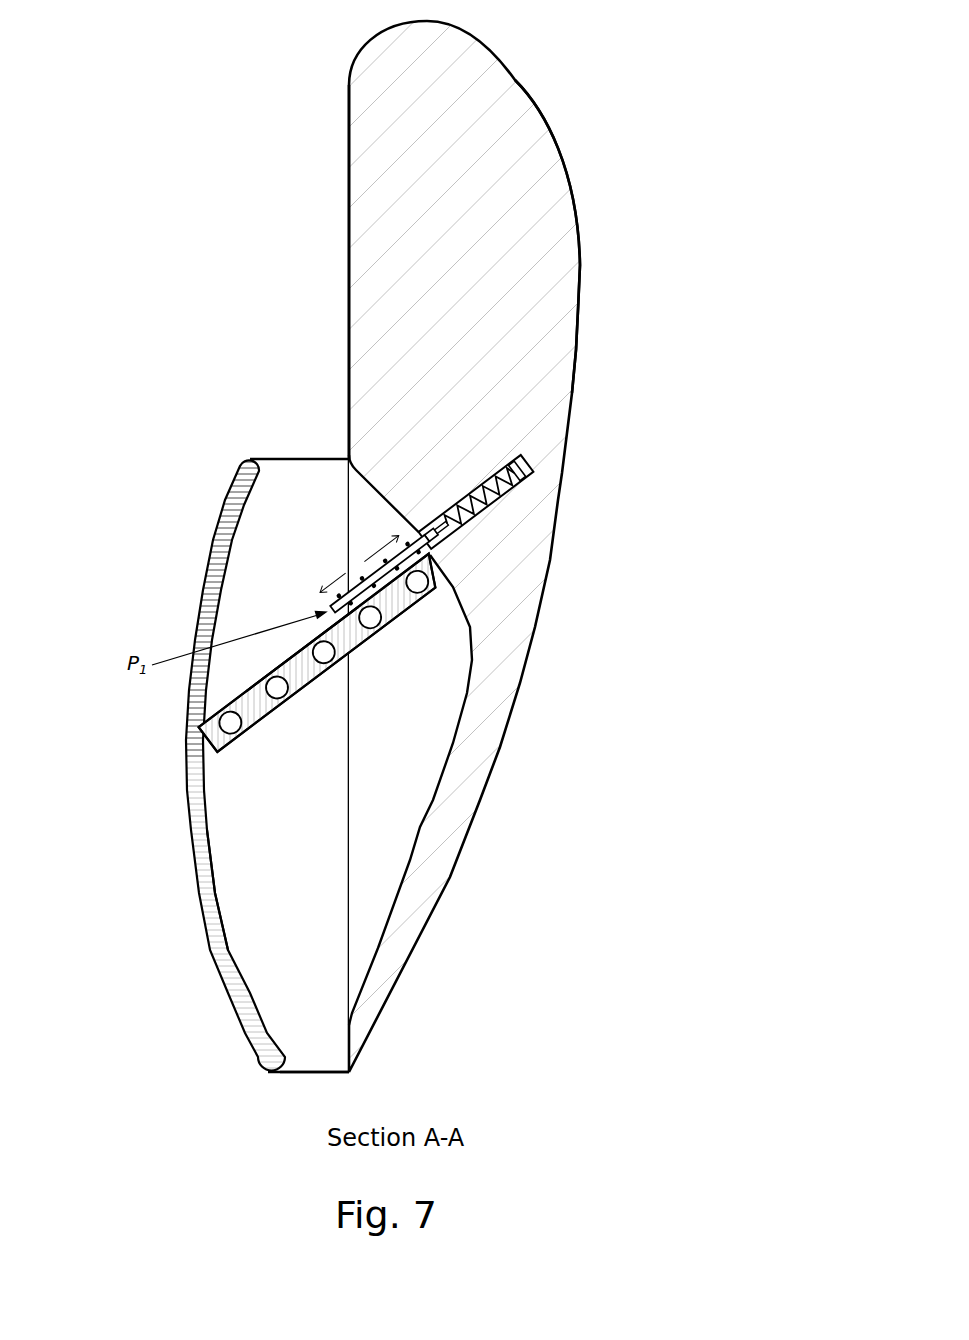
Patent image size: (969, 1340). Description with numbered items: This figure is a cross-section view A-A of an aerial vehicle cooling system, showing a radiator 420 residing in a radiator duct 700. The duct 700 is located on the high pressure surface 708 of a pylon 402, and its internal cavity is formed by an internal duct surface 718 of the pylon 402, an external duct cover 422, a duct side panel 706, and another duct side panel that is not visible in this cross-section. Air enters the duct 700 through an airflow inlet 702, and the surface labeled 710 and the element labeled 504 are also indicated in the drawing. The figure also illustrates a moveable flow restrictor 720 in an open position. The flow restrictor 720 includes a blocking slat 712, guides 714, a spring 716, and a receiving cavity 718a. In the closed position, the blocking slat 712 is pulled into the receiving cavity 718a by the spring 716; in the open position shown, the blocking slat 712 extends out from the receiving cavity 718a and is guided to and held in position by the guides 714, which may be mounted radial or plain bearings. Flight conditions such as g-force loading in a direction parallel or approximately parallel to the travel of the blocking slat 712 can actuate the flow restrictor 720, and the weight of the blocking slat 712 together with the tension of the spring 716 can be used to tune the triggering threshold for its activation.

The pylon 402 is at (515, 118).
The high pressure surface 708 is at (349, 178).
The curved outer surface 710 is at (581, 256).
The airflow inlet 702 is at (302, 437).
The receiving cavity 718a is at (530, 462).
The moveable flow restrictor 720 is at (338, 577).
The spring 716 is at (500, 497).
The guides 714 is at (453, 582).
The blocking slat 712 is at (427, 605).
The radiator 420 is at (295, 673).
The internal duct surface 718 is at (433, 797).
The radiator duct 700 is at (318, 821).
The duct side panel 706 is at (233, 822).
The external duct cover 422 is at (210, 925).
The bottom wall 504 is at (306, 1090).